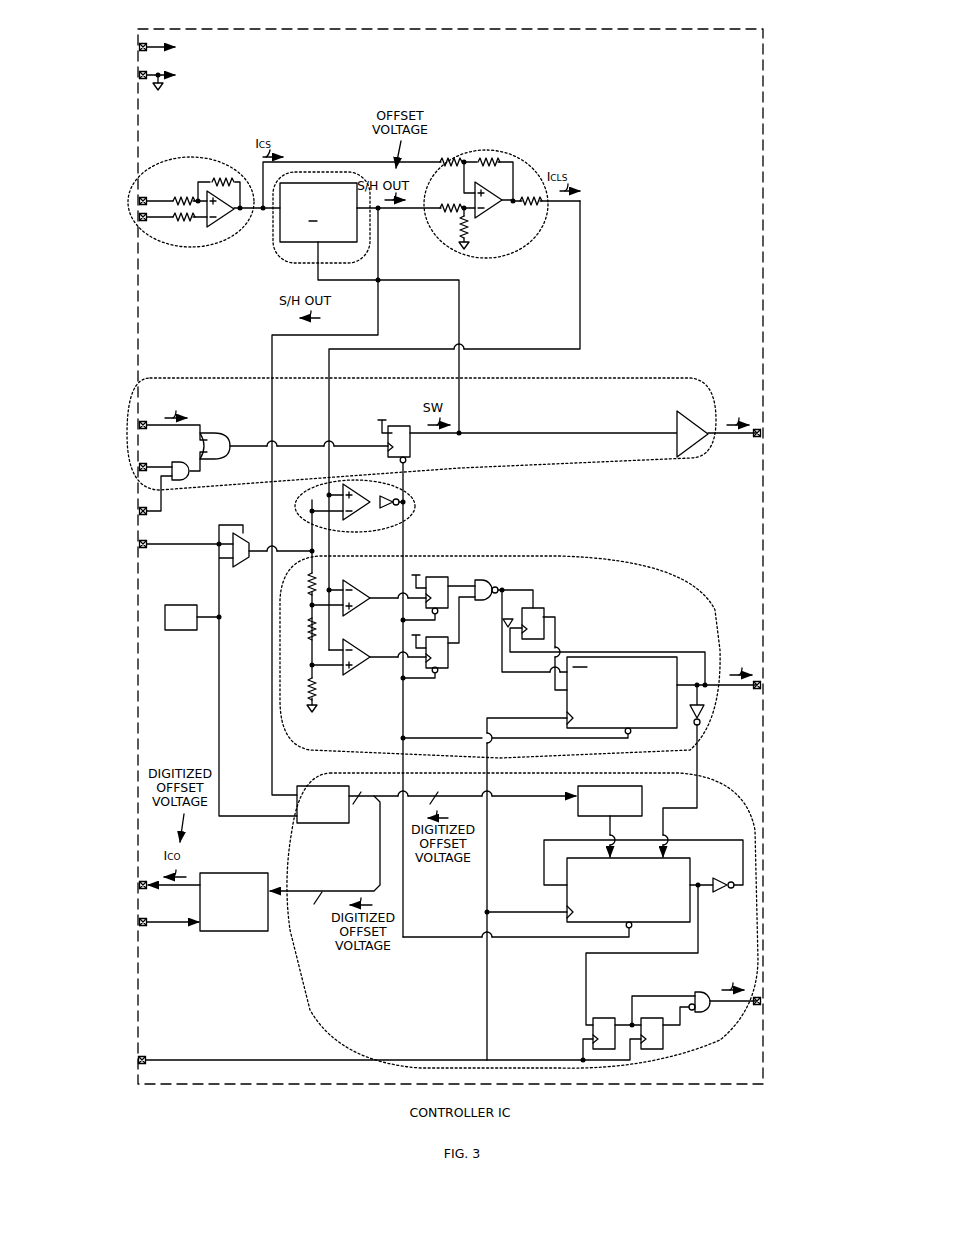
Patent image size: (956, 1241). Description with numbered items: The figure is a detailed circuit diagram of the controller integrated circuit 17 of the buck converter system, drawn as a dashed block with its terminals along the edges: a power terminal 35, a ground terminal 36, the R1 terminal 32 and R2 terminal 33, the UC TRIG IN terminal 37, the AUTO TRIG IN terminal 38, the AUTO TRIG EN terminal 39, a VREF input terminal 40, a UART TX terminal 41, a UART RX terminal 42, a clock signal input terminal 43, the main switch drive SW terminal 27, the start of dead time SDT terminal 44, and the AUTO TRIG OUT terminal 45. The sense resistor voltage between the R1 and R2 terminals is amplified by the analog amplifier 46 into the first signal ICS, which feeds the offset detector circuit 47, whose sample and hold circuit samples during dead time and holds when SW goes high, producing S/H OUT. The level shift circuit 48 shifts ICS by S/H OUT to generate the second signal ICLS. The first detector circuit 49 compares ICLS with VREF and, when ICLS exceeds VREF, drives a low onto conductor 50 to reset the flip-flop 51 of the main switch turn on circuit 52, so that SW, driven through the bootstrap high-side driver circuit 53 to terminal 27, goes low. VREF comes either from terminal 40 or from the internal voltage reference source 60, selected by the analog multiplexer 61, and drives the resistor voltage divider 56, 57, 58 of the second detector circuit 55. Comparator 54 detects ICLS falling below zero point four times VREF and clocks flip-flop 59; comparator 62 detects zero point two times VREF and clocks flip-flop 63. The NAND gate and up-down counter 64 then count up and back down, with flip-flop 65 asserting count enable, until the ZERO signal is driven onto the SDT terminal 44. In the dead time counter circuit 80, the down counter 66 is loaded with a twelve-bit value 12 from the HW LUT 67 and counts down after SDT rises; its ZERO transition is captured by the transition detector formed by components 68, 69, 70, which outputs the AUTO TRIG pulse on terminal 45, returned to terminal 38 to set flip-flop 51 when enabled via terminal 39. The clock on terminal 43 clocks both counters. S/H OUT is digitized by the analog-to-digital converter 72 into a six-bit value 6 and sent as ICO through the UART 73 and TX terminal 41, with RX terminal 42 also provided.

The controller integrated circuit 17 is at (521, 29).
The power terminal 35 is at (139, 45).
The ground terminal 36 is at (139, 80).
The R1 terminal 32 is at (147, 198).
The R2 terminal 33 is at (147, 221).
The analog amplifier 46 is at (207, 159).
The offset detector circuit 47 is at (318, 172).
The level shift circuit 48 is at (486, 150).
The main switch turn on circuit 52 is at (211, 378).
The UC TRIG IN terminal 37 is at (147, 428).
The AUTO TRIG IN terminal 38 is at (147, 464).
The AUTO TRIG EN terminal 39 is at (147, 514).
The VREF input terminal 40 is at (147, 547).
The flip-flop 51 is at (401, 424).
The conductor 50 is at (406, 463).
The bootstrap high-side driver circuit 53 is at (689, 412).
The main switch drive SW terminal 27 is at (755, 440).
The first detector circuit 49 is at (430, 503).
The analog multiplexer 61 is at (243, 569).
The internal voltage reference source 60 is at (193, 609).
The second detector circuit 55 is at (588, 556).
The resistor of voltage divider 56 is at (308, 593).
The resistor of voltage divider 57 is at (308, 636).
The resistor of voltage divider 58 is at (308, 683).
The comparator 54 is at (356, 585).
The comparator 62 is at (356, 644).
The flip-flop 59 is at (435, 576).
The flip-flop 63 is at (451, 653).
The up/down counter and NAND gate 64 is at (481, 578).
The flip-flop 65 is at (542, 608).
The start of dead time SDT terminal 44 is at (755, 692).
The dead time counter circuit 80 is at (290, 971).
The analog-to-digital converter 72 is at (320, 823).
The 6-bit digital value 6 is at (379, 836).
The UART 73 is at (207, 902).
The UART TX terminal 41 is at (147, 889).
The UART RX terminal 42 is at (147, 926).
The HW LUT 67 is at (577, 813).
The 12-bit value 12 is at (615, 828).
The down counter 66 is at (692, 867).
The flip-flop of transition detector 68 is at (605, 1010).
The flip-flop of transition detector 69 is at (673, 1045).
The NAND gate of transition detector 70 is at (702, 1012).
The AUTO TRIG OUT terminal 45 is at (755, 1006).
The clock signal input terminal 43 is at (146, 1056).